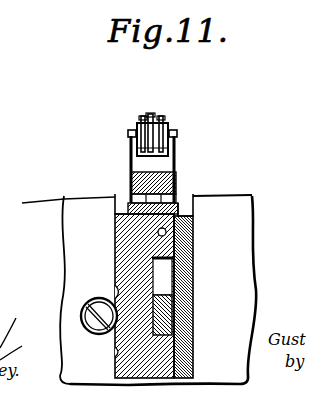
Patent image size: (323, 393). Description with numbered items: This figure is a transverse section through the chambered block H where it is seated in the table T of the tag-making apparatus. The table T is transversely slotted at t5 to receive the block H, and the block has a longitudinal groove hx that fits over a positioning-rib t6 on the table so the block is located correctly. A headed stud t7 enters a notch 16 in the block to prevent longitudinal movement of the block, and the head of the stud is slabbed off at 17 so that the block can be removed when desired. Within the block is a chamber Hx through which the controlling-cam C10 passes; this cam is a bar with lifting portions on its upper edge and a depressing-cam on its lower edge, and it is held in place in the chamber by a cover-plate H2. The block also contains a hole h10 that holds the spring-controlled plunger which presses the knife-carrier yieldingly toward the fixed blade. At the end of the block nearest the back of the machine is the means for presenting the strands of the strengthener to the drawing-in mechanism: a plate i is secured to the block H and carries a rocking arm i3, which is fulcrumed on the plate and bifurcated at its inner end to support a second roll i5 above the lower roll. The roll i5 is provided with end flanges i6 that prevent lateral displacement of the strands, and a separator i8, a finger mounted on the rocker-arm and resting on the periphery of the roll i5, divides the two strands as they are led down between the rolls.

The plate i is at (116, 196).
The rocking arm i3 is at (166, 162).
The second roll i5 is at (160, 124).
The end flanges i6 is at (164, 124).
The separator i8 is at (150, 114).
The transverse slot t5 is at (183, 213).
The table T is at (64, 201).
The hole h10 is at (166, 231).
The chamber Hx is at (163, 266).
The cover-plate H2 is at (191, 268).
The controlling-cam C10 is at (174, 303).
The chambered block H is at (168, 357).
The notch 16 is at (118, 290).
The slabbed-off portion 17 is at (93, 299).
The headed stud t7 is at (94, 319).
The positioning-rib t6 is at (158, 290).
The longitudinal groove hx is at (117, 352).